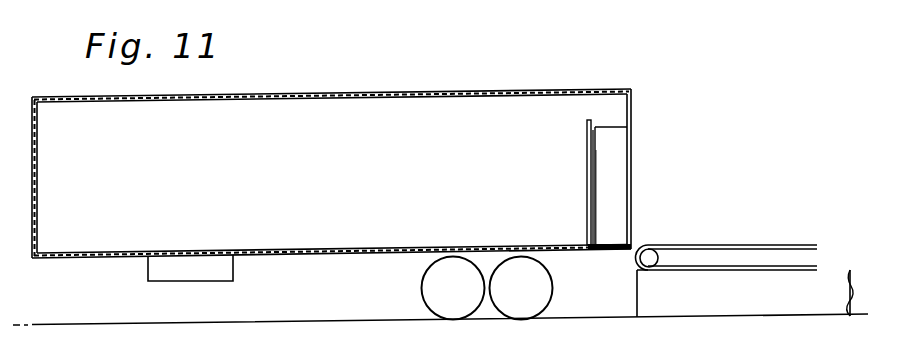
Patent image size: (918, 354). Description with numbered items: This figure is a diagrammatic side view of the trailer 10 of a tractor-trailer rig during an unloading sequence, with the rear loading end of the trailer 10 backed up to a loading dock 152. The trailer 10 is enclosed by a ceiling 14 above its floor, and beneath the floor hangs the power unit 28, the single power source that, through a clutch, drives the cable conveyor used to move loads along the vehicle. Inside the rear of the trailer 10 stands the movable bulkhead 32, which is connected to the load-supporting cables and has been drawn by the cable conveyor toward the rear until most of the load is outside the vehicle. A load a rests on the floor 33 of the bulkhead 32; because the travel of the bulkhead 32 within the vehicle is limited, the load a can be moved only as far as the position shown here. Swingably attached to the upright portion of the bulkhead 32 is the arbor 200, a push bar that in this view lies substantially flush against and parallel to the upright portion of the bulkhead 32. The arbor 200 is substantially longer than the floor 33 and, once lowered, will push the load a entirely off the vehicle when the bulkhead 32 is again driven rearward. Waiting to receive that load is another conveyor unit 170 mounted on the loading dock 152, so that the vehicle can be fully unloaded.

The trailer 10 is at (439, 70).
The ceiling 14 is at (573, 105).
The power unit 28 is at (172, 283).
The movable bulkhead 32 is at (586, 156).
The load a is at (623, 152).
The arbor 200 is at (598, 197).
The floor of the bulkhead 33 is at (626, 243).
The conveyor unit 170 is at (730, 240).
The loading dock 152 is at (754, 305).